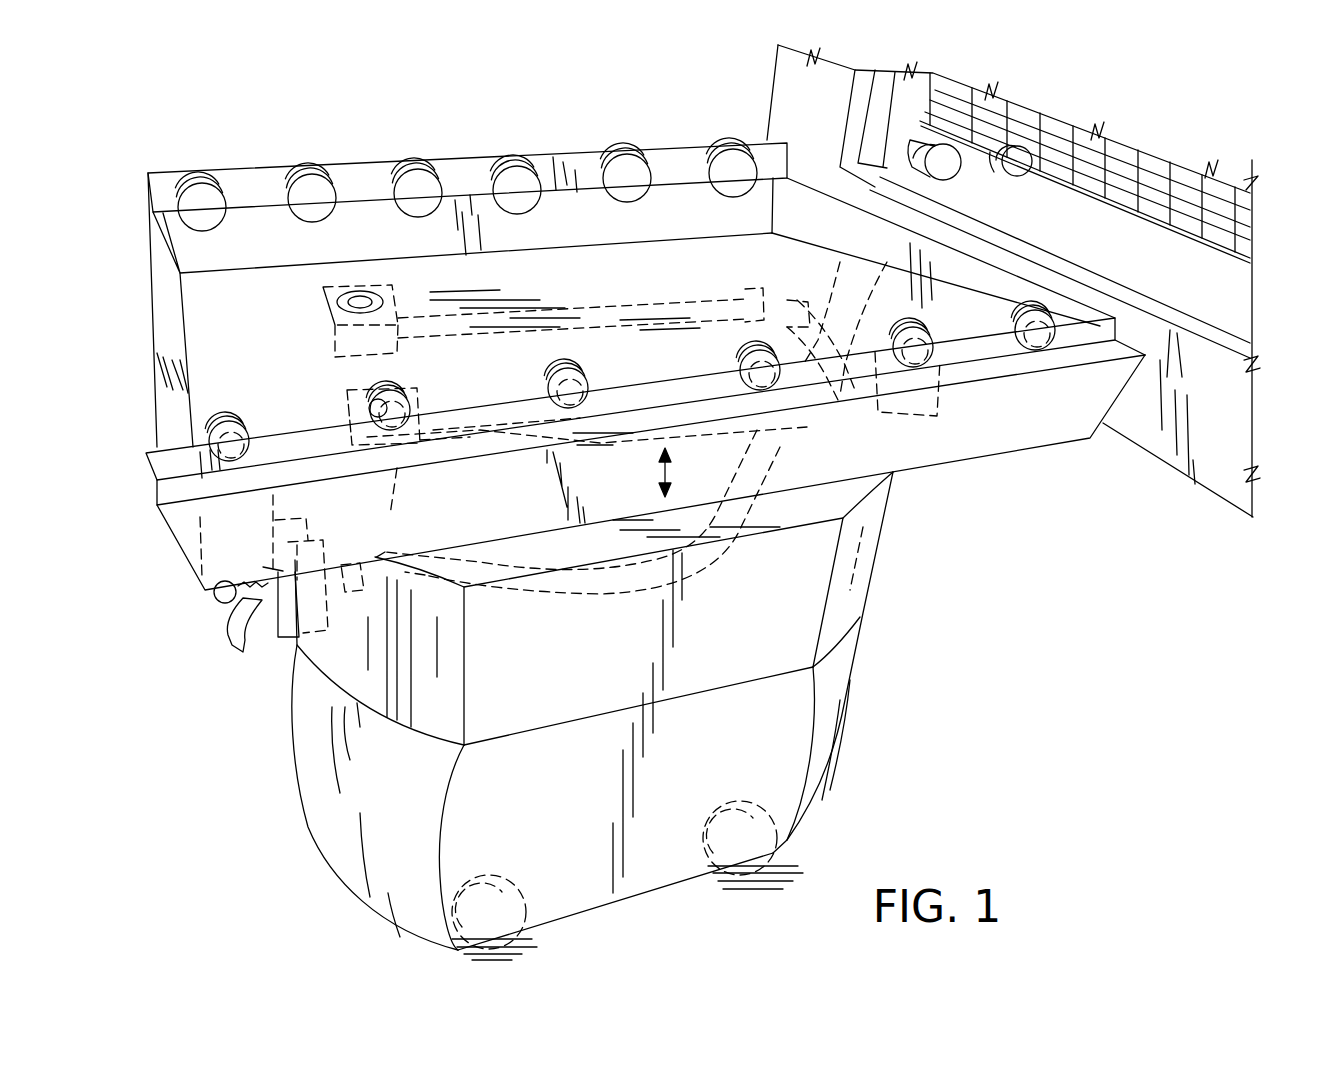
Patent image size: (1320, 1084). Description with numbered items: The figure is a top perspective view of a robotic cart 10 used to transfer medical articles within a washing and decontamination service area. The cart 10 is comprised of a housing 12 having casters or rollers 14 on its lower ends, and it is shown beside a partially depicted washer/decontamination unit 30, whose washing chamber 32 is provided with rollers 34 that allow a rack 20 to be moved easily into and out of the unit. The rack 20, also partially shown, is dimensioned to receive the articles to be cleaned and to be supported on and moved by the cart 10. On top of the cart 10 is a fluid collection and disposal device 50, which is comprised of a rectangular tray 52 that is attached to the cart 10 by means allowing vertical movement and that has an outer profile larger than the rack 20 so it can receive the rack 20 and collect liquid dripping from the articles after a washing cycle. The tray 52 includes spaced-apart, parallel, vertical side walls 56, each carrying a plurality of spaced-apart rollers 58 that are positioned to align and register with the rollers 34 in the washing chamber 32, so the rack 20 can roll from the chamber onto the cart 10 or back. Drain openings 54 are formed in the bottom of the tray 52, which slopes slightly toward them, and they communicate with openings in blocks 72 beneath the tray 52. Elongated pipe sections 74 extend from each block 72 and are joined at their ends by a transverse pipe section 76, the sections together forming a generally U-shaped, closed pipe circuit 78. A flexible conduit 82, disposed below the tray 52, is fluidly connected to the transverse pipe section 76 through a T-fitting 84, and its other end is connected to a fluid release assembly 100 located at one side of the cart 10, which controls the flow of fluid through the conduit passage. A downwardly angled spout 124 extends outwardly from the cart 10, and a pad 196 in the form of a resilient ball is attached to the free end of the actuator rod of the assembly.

The cart 10 is at (250, 783).
The housing 12 is at (840, 683).
The casters or rollers 14 is at (502, 939).
The rack 20 is at (1100, 216).
The washer/decontamination unit 30 is at (1205, 472).
The washing chamber 32 is at (1223, 303).
The rollers 34 is at (1020, 180).
The fluid collection and disposal device 50 is at (489, 142).
The tray 52 is at (968, 440).
The drain openings 54 is at (355, 305).
The side walls 56 is at (583, 163).
The rollers 58 is at (413, 190).
The blocks 72 is at (385, 356).
The pipe sections 74 is at (637, 303).
The transverse pipe section 76 is at (820, 317).
The pipe circuit 78 is at (740, 285).
The flexible conduit 82 is at (592, 598).
The T-fitting 84 is at (855, 345).
The fluid release assembly 100 is at (282, 643).
The spout 124 is at (240, 645).
The pad 196 is at (214, 608).